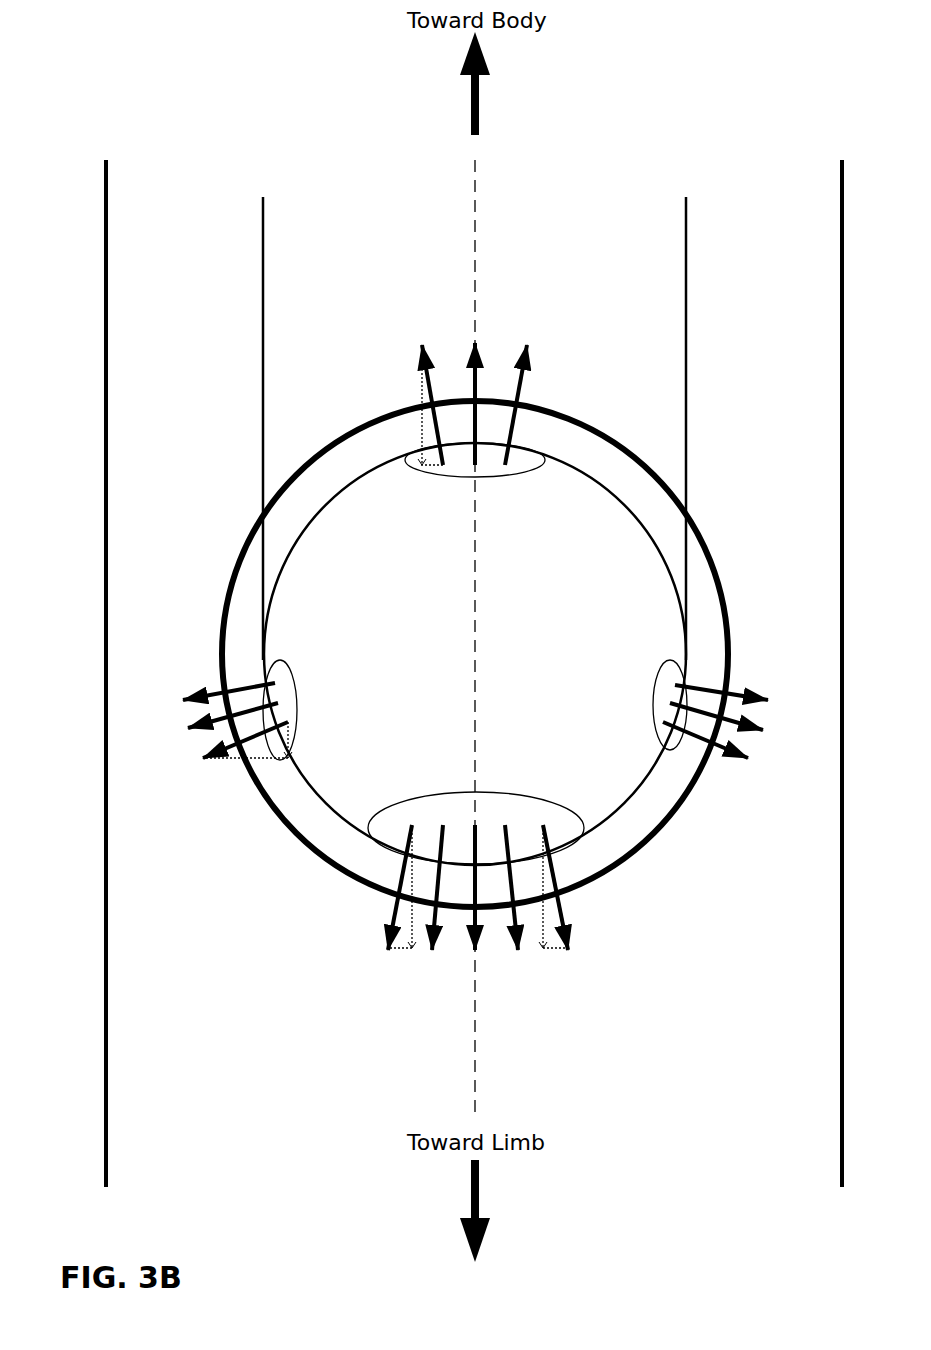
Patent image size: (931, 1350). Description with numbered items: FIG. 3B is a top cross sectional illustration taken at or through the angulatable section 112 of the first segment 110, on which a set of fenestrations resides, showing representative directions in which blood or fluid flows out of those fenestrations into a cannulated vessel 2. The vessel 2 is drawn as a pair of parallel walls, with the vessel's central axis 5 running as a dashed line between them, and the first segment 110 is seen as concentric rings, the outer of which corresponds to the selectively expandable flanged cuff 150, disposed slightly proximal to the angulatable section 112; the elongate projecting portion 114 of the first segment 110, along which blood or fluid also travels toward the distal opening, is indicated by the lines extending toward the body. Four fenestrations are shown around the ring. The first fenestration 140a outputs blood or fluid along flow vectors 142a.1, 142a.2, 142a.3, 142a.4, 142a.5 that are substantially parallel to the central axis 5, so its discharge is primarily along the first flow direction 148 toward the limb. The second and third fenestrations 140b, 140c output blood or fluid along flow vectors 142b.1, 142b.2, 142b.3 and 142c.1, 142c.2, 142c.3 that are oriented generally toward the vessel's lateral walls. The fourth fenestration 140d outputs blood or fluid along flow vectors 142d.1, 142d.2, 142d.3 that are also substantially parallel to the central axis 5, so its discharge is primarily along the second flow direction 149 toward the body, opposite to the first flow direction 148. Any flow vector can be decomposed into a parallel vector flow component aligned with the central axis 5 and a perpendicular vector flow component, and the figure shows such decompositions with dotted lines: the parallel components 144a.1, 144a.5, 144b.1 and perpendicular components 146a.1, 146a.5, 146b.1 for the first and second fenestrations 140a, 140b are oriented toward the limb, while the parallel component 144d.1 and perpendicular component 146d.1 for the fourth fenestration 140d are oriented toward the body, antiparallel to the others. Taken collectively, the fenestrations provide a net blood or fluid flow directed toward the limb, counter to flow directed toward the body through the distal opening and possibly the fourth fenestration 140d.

The vessel 2 is at (106, 188).
The vessel's central axis 5 is at (478, 203).
The first segment 110 is at (455, 743).
The angulatable section 112 is at (637, 792).
The elongate projecting portion 114 is at (688, 300).
The first fenestration 140a is at (413, 795).
The second fenestration 140b is at (292, 700).
The third fenestration 140c is at (658, 716).
The fourth fenestration 140d is at (519, 478).
The flow vector 142a.1 is at (393, 912).
The flow vector 142a.2 is at (449, 920).
The flow vector 142a.3 is at (478, 920).
The flow vector 142a.4 is at (517, 912).
The flow vector 142a.5 is at (567, 910).
The flow vector 142b.1 is at (205, 745).
The flow vector 142b.2 is at (230, 716).
The flow vector 142b.3 is at (217, 690).
The flow vector 142c.1 is at (717, 757).
The flow vector 142c.2 is at (735, 738).
The flow vector 142c.3 is at (740, 692).
The flow vector 142d.1 is at (447, 378).
The flow vector 142d.2 is at (478, 378).
The flow vector 142d.3 is at (522, 378).
The parallel vector flow component 144a.1 is at (412, 840).
The parallel vector flow component 144a.5 is at (545, 920).
The parallel vector flow component 144b.1 is at (290, 736).
The parallel vector flow component 144d.1 is at (421, 388).
The perpendicular vector flow component 146a.1 is at (398, 958).
The perpendicular vector flow component 146a.5 is at (565, 950).
The perpendicular vector flow component 146b.1 is at (230, 761).
The perpendicular vector flow component 146d.1 is at (423, 470).
The first flow direction 148 is at (480, 1182).
The second flow direction 149 is at (480, 106).
The flanged cuff 150 is at (290, 832).